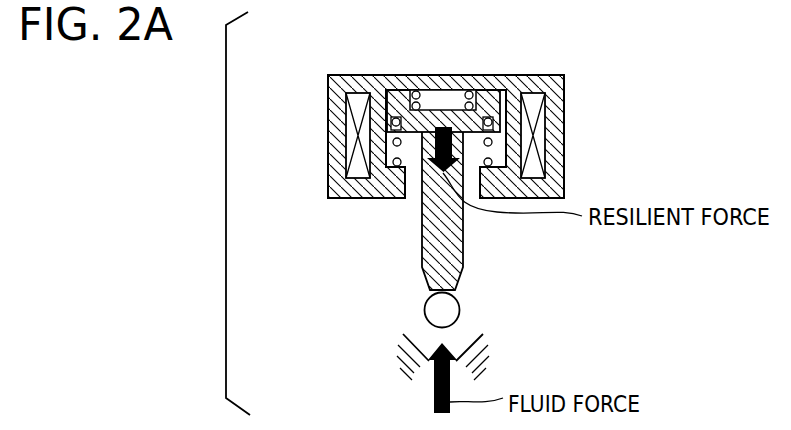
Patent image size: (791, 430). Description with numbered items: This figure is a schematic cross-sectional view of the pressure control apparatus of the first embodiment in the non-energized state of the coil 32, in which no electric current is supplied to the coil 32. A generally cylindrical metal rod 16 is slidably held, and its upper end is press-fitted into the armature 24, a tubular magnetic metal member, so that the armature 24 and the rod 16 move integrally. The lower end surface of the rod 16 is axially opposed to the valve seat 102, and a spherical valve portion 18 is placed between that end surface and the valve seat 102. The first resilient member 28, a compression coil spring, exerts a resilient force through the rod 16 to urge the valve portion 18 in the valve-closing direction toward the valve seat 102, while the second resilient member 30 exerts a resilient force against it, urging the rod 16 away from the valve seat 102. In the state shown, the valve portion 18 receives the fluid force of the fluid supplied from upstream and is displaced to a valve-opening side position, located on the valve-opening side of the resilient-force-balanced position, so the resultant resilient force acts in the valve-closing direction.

The rod 16 is at (448, 268).
The valve portion 18 is at (432, 308).
The armature 24 is at (486, 92).
The first resilient member 28 is at (420, 92).
The second resilient member 30 is at (395, 163).
The coil 32 is at (542, 143).
The valve seat 102 is at (403, 351).